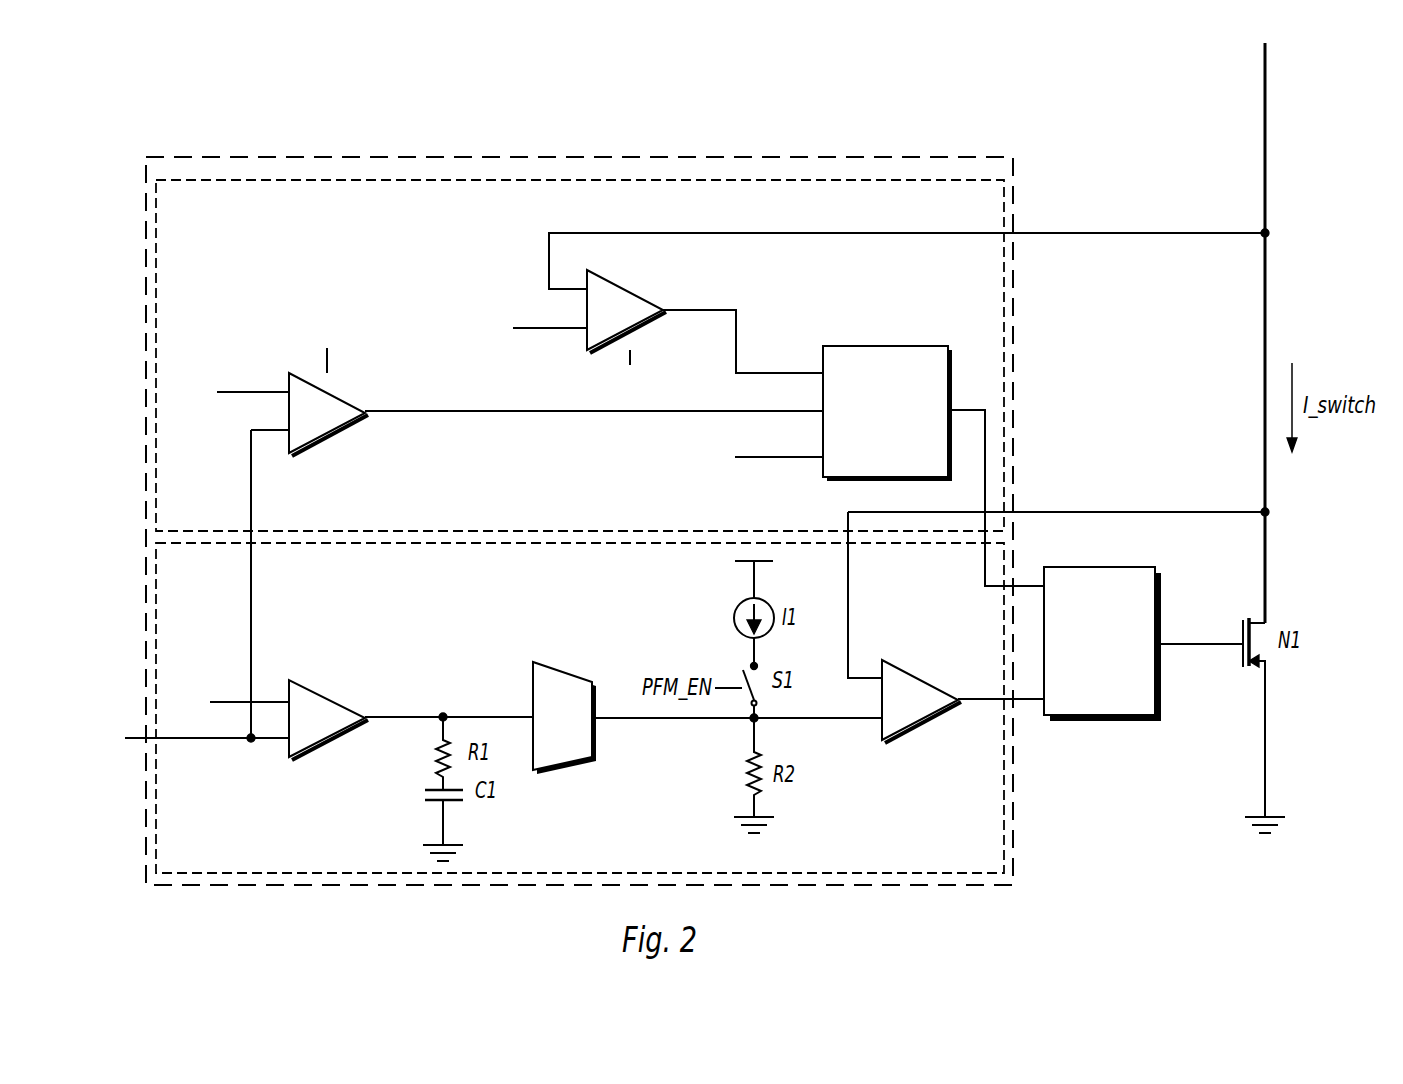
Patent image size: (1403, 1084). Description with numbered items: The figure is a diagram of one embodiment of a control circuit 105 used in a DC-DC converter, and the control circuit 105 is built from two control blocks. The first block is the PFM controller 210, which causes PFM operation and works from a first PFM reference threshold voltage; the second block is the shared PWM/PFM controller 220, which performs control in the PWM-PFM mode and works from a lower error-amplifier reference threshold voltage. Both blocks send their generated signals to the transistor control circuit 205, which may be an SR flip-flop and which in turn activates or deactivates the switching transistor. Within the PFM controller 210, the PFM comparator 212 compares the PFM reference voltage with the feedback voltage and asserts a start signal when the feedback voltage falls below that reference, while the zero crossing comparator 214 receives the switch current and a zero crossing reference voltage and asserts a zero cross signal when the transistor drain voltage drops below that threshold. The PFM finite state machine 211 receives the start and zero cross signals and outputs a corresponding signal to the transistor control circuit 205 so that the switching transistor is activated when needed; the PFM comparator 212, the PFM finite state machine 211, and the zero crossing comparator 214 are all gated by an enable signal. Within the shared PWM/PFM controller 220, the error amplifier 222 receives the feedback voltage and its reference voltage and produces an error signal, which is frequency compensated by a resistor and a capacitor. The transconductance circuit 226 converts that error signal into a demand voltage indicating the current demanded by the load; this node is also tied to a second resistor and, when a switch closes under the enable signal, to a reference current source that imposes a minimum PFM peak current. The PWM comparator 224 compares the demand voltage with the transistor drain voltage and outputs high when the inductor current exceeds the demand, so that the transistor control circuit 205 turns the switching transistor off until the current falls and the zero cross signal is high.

The control circuit 105 is at (560, 157).
The PFM controller 210 is at (580, 355).
The PFM finite state machine 211 is at (704, 448).
The PFM comparator 212 is at (347, 393).
The zero crossing comparator 214 is at (650, 297).
The shared PWM/PFM controller 220 is at (580, 708).
The error amplifier 222 is at (322, 692).
The PWM comparator 224 is at (925, 675).
The transconductance circuit 226 is at (548, 662).
The transistor control circuit 205 is at (1143, 644).